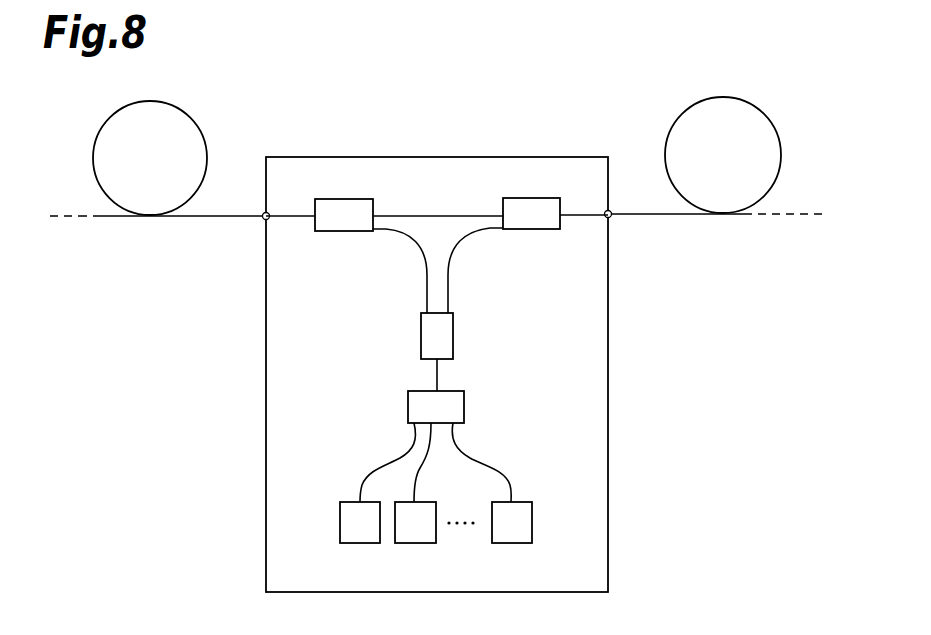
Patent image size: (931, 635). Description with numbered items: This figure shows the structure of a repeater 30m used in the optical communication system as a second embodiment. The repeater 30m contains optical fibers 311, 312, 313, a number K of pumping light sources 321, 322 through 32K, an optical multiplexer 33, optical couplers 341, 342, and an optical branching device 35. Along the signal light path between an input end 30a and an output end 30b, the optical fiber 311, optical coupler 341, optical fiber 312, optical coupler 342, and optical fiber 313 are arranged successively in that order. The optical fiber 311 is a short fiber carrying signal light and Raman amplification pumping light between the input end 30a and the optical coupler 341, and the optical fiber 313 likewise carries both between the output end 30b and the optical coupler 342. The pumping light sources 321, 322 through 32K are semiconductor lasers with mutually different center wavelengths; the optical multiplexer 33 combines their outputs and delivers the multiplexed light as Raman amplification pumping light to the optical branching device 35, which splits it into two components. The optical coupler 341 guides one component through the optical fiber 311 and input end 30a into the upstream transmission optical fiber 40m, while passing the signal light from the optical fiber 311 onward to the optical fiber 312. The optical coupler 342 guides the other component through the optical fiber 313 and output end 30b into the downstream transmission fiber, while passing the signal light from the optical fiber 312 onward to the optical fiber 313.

The optical fiber 40m is at (172, 103).
The repeater 30m is at (480, 157).
The input end 30a is at (262, 220).
The output end 30b is at (612, 216).
The optical fiber 311 is at (278, 214).
The optical fiber 312 is at (420, 214).
The optical fiber 313 is at (591, 213).
The optical coupler 341 is at (347, 231).
The optical coupler 342 is at (540, 230).
The optical branching device 35 is at (421, 335).
The optical multiplexer 33 is at (408, 404).
The pumping light source 321 is at (352, 543).
The pumping light source 322 is at (416, 543).
The pumping light source 32K is at (514, 543).